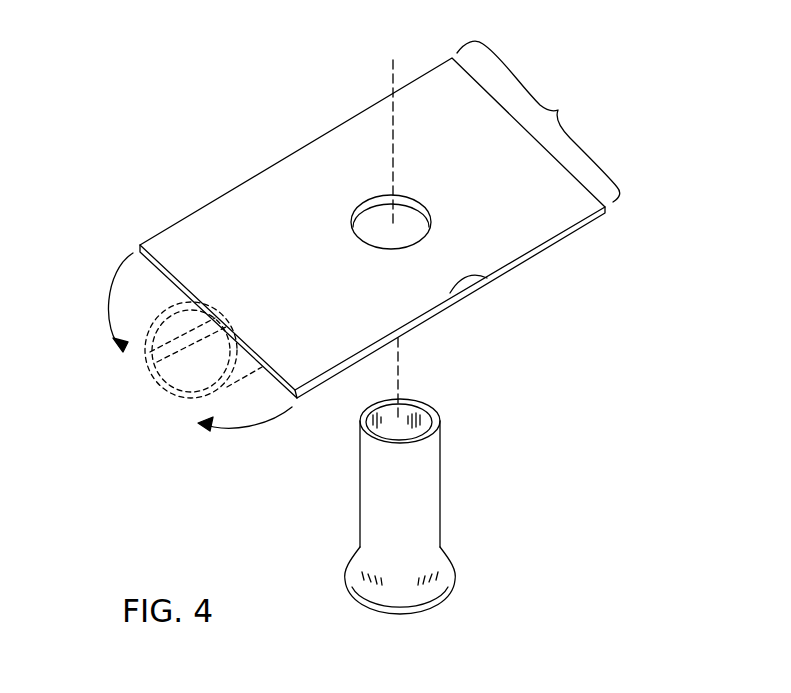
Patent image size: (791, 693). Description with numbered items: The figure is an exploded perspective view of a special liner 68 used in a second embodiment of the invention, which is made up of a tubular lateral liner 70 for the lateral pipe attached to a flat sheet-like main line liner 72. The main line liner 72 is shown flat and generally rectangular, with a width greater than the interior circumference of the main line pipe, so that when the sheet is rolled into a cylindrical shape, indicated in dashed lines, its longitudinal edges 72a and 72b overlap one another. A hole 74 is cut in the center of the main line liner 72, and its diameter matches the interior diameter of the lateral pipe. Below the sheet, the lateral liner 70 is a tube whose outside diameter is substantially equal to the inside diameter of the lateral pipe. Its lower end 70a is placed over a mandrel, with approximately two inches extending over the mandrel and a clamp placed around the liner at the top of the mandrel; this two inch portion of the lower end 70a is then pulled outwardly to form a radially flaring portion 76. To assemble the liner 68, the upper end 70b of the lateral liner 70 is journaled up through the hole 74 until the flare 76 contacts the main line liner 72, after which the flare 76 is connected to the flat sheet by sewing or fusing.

The liner 68 is at (531, 95).
The lateral liner 70 is at (412, 523).
The lower end of lateral liner 70a is at (422, 593).
The upper end of lateral liner 70b is at (427, 462).
The main line liner 72 is at (530, 162).
The longitudinal edge 72a is at (485, 280).
The longitudinal edge 72b is at (207, 203).
The hole 74 is at (372, 195).
The radially flaring portion 76 is at (350, 583).